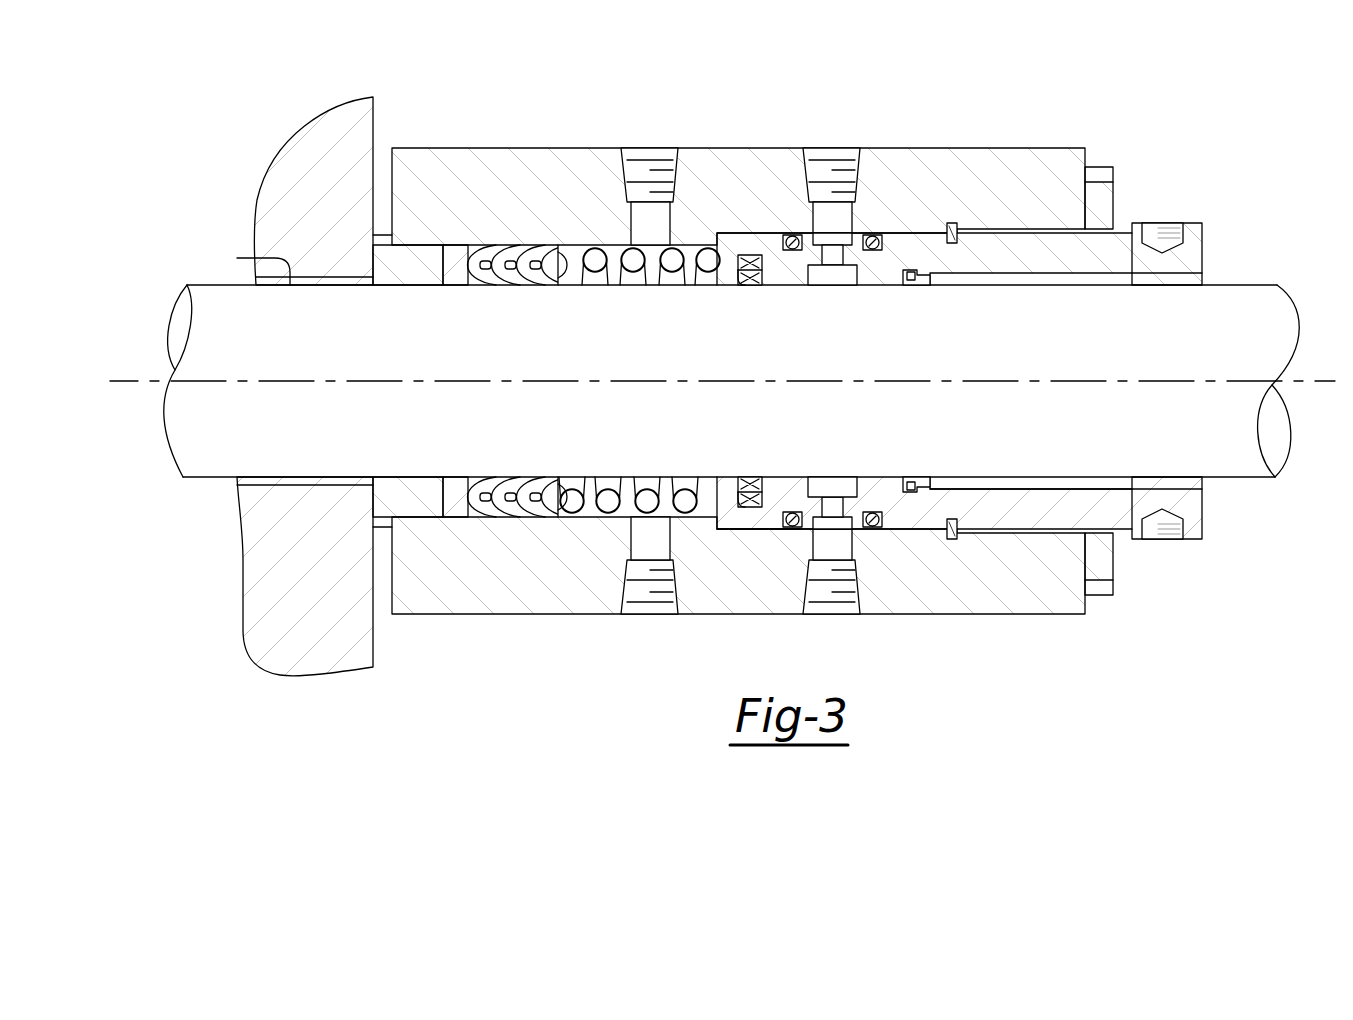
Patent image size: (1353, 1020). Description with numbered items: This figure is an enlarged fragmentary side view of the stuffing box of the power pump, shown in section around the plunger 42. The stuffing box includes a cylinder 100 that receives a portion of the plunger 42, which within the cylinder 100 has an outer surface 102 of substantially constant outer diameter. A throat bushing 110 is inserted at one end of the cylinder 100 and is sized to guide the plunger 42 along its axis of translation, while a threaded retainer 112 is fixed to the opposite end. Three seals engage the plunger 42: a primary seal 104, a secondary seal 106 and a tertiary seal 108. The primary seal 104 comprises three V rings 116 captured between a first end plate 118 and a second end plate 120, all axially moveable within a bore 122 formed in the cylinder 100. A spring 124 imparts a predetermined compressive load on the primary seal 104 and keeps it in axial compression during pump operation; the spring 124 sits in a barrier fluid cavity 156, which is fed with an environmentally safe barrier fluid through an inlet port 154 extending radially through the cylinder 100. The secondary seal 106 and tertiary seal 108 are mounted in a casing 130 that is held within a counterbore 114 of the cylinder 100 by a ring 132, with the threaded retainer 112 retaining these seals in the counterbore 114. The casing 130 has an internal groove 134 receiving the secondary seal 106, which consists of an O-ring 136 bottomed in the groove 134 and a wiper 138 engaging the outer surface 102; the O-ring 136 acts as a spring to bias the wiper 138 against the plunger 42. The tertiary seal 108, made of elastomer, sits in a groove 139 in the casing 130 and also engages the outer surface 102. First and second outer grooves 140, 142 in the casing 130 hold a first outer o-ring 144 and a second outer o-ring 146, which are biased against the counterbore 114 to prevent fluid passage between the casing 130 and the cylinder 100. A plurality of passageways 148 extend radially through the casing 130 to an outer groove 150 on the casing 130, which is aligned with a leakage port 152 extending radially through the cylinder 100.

The plunger 42 is at (190, 458).
The cylinder 100 is at (1013, 147).
The outer surface 102 is at (240, 258).
The primary seal 104 is at (491, 249).
The secondary seal 106 is at (738, 481).
The tertiary seal 108 is at (924, 483).
The throat bushing 110 is at (397, 286).
The threaded retainer 112 is at (1194, 260).
The counterbore 114 is at (737, 522).
The V rings 116 is at (528, 286).
The first end plate 118 is at (455, 477).
The second end plate 120 is at (548, 494).
The bore 122 is at (612, 285).
The spring 124 is at (608, 498).
The casing 130 is at (890, 286).
The ring 132 is at (958, 238).
The internal groove 134 is at (752, 268).
The O-ring 136 is at (786, 252).
The wiper 138 is at (750, 477).
The groove 139 is at (908, 477).
The first outer groove 140 is at (803, 529).
The second outer groove 142 is at (872, 529).
The first outer o-ring 144 is at (803, 511).
The second outer o-ring 146 is at (870, 511).
The passageways 148 is at (848, 490).
The outer groove 150 is at (832, 255).
The leakage port 152 is at (810, 168).
The inlet port 154 is at (628, 168).
The barrier fluid cavity 156 is at (588, 480).